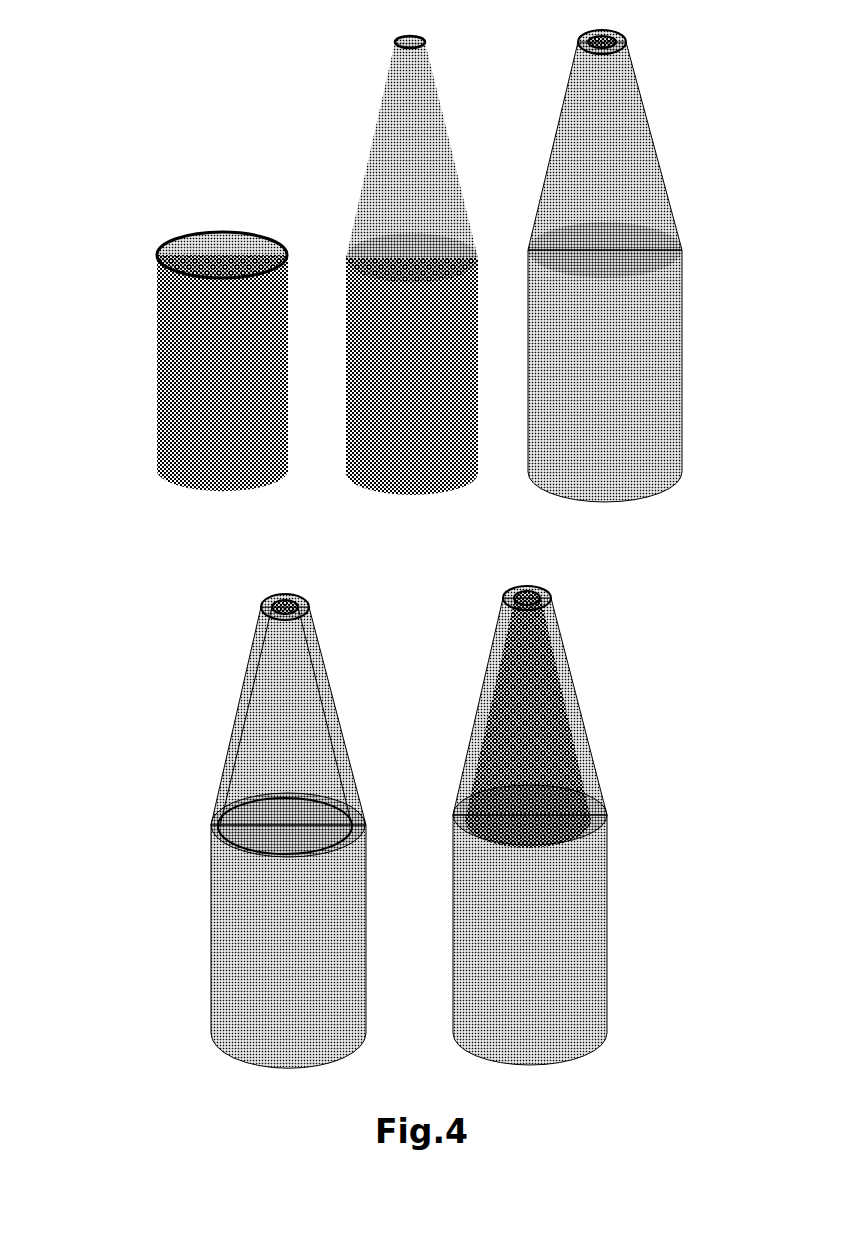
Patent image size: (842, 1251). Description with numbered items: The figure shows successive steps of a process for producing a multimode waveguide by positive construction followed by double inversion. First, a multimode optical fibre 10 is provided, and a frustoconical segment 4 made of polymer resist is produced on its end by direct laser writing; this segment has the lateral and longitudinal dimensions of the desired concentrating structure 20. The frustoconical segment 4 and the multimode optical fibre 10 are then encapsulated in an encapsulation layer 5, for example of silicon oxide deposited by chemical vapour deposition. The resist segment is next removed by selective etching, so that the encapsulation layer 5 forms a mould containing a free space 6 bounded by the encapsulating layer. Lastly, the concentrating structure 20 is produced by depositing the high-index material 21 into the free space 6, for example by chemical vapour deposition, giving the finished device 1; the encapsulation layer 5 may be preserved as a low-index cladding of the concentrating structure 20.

The assembled nozzle device 1 is at (544, 697).
The frustoconical segment 4 is at (373, 101).
The encapsulation layer 5 is at (570, 45).
The free space 6 is at (270, 713).
The multimode optical fibre 10 is at (153, 425).
The concentrating structure 20 is at (566, 692).
The high-index material 21 is at (518, 698).